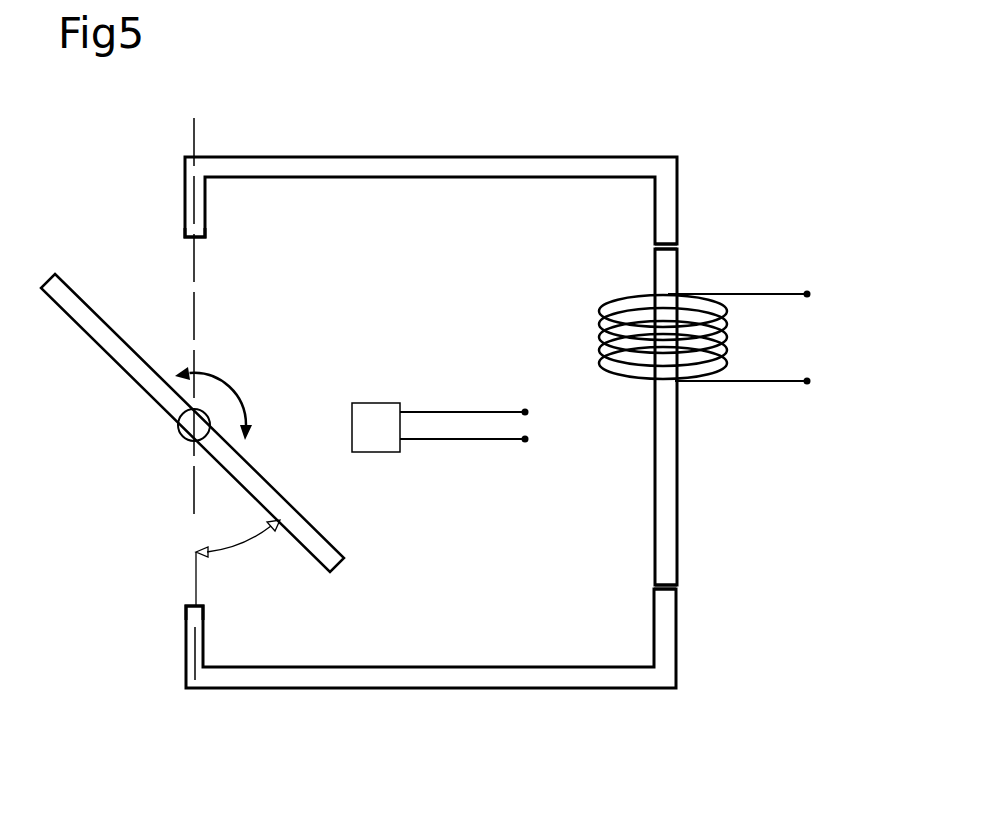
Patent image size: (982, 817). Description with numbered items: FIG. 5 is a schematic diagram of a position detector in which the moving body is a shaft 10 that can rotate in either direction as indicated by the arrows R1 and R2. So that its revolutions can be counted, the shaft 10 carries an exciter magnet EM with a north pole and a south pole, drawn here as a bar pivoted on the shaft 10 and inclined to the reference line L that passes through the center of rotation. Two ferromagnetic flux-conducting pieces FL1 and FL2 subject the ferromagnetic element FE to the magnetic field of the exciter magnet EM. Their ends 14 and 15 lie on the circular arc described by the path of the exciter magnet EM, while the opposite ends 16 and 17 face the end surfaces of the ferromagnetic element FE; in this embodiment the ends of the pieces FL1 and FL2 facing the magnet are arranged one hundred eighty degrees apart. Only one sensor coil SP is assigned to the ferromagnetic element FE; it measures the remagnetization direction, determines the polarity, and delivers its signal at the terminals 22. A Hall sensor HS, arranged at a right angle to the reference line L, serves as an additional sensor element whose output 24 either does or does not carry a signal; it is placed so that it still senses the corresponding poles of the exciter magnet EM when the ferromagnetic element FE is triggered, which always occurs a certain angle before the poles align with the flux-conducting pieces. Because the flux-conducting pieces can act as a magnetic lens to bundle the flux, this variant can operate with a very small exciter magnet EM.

The shaft 10 is at (183, 435).
The end of flux-conducting piece 14 is at (185, 230).
The end of flux-conducting piece 15 is at (185, 613).
The end of flux-conducting piece 16 is at (667, 243).
The end of flux-conducting piece 17 is at (667, 590).
The output 22 is at (812, 302).
The output 24 is at (532, 415).
The reference line L is at (195, 135).
The ferromagnetic flux-conducting piece FL1 is at (607, 165).
The ferromagnetic flux-conducting piece FL2 is at (609, 675).
The ferromagnetic element FE is at (662, 457).
The sensor coil SP is at (727, 338).
The Hall sensor HS is at (377, 428).
The exciter magnet EM is at (285, 512).
The rotation direction arrow R1 is at (280, 439).
The rotation direction arrow R2 is at (213, 389).